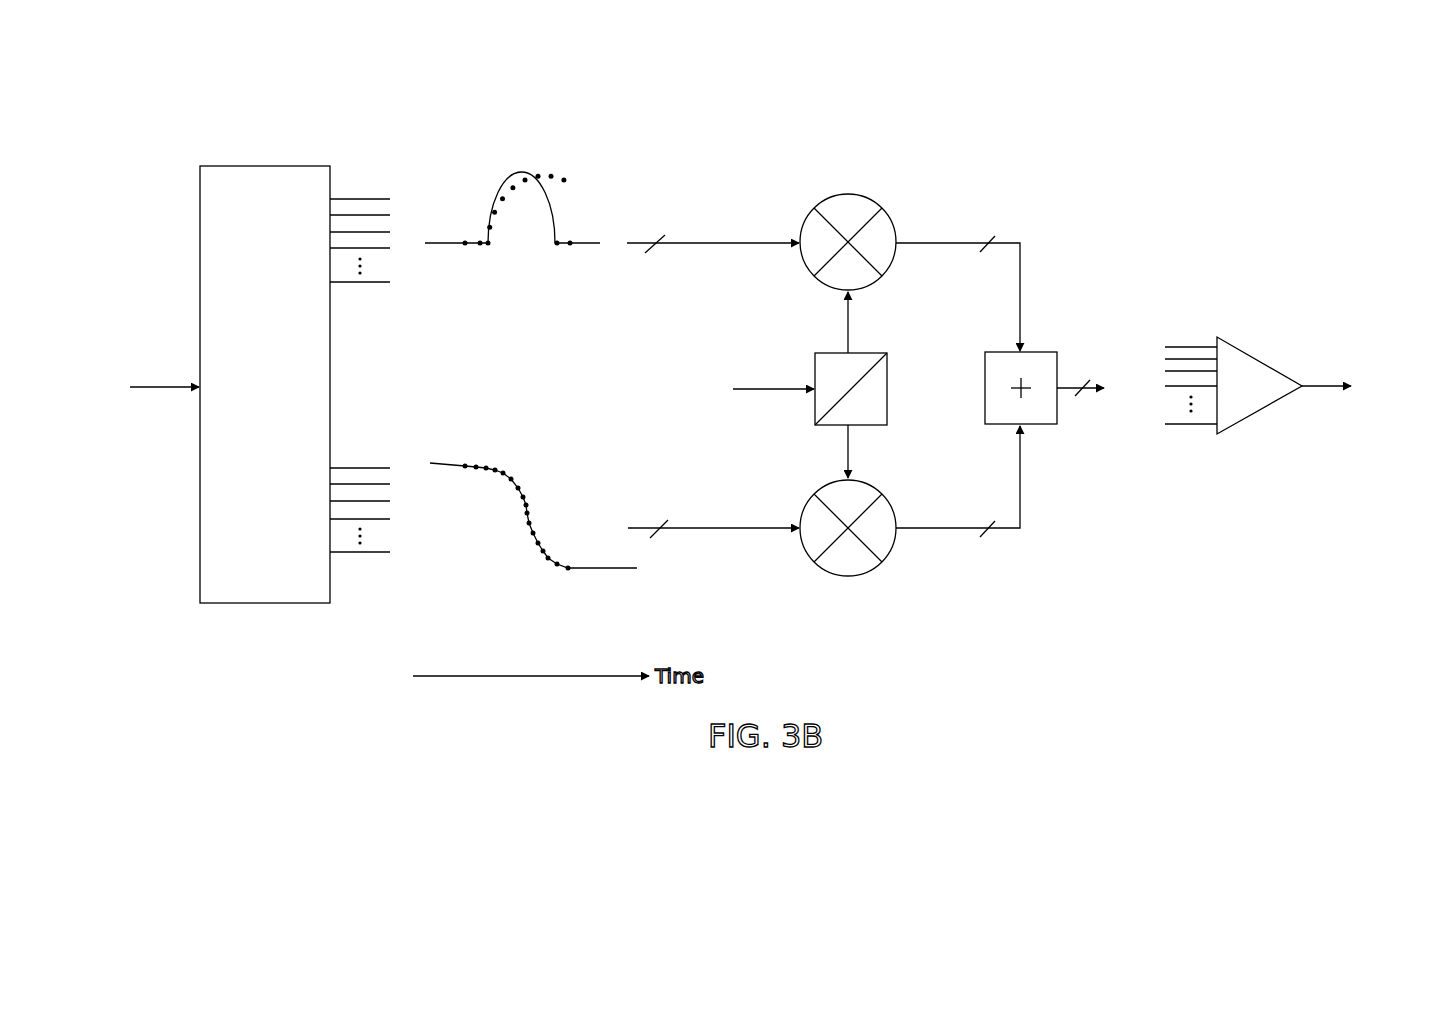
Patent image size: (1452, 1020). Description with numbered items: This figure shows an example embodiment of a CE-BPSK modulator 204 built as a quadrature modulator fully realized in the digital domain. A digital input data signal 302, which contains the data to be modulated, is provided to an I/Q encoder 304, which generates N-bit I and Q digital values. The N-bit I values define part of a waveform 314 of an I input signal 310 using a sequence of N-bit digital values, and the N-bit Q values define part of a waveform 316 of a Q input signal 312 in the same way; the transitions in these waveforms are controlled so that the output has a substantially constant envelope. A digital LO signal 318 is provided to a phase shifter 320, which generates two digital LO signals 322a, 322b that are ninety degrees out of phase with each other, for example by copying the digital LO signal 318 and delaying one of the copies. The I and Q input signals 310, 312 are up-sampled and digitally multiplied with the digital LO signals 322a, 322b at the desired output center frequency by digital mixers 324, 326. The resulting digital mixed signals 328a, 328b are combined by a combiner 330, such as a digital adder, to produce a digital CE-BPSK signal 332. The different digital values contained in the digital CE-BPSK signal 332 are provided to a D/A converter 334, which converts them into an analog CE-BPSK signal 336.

The CE-BPSK modulator 204 is at (797, 100).
The digital input data signal 302 is at (160, 385).
The I/Q encoder 304 is at (200, 222).
The I input signal 310 is at (722, 243).
The Q input signal 312 is at (736, 528).
The waveform of I input signal 314 is at (547, 165).
The waveform of Q input signal 316 is at (507, 436).
The digital LO signal 318 is at (756, 389).
The phase shifter 320 is at (887, 389).
The digital LO signal 322a is at (848, 330).
The digital LO signal 322b is at (848, 446).
The digital mixer 324 is at (850, 194).
The digital mixer 326 is at (888, 557).
The digital mixed signal 328a is at (948, 243).
The digital mixed signal 328b is at (1020, 528).
The combiner 330 is at (1045, 352).
The digital CE-BPSK signal 332 is at (1068, 388).
The D/A converter 334 is at (1247, 348).
The analog CE-BPSK signal 336 is at (1327, 386).